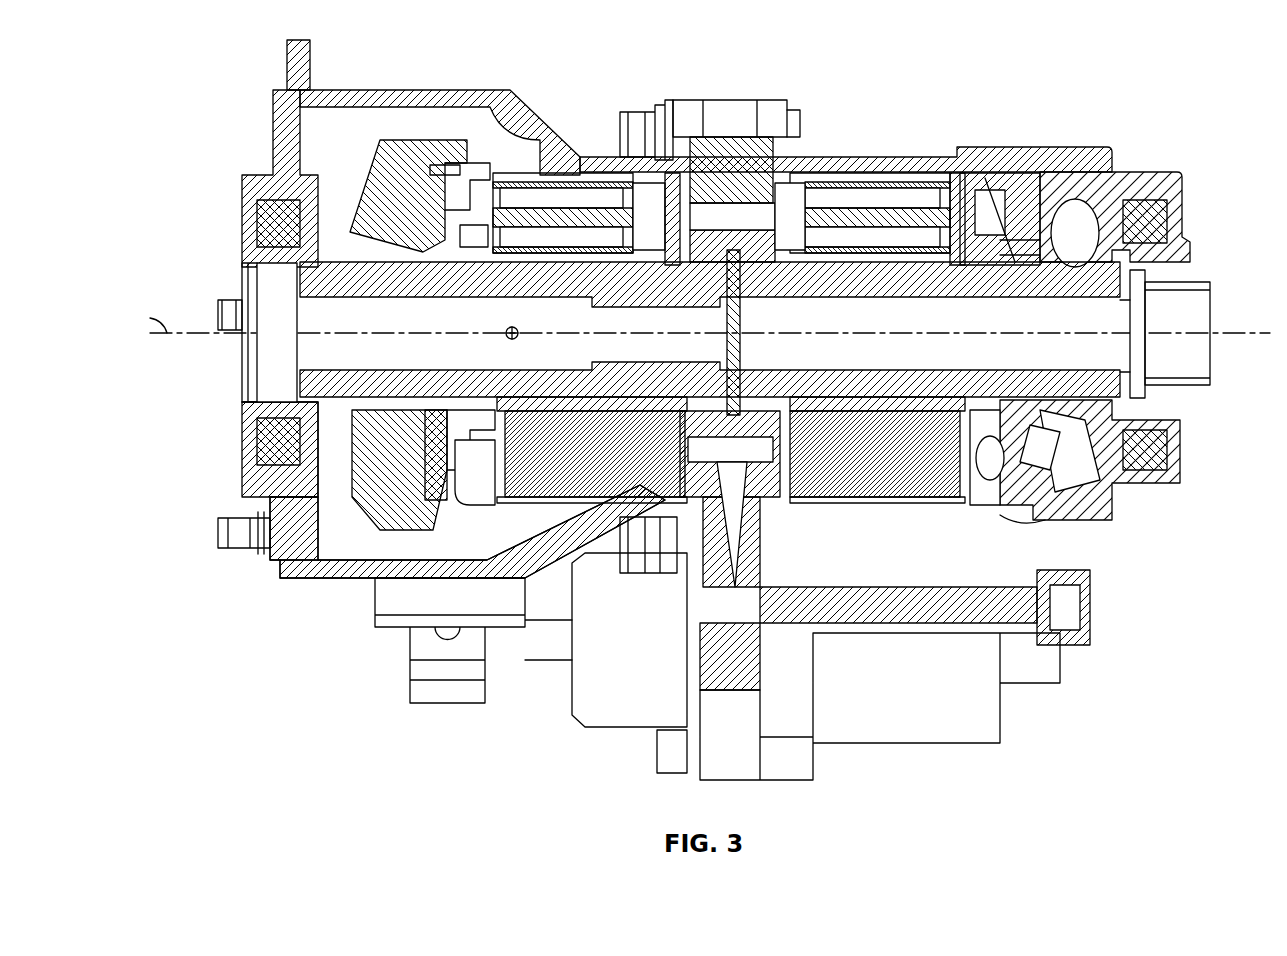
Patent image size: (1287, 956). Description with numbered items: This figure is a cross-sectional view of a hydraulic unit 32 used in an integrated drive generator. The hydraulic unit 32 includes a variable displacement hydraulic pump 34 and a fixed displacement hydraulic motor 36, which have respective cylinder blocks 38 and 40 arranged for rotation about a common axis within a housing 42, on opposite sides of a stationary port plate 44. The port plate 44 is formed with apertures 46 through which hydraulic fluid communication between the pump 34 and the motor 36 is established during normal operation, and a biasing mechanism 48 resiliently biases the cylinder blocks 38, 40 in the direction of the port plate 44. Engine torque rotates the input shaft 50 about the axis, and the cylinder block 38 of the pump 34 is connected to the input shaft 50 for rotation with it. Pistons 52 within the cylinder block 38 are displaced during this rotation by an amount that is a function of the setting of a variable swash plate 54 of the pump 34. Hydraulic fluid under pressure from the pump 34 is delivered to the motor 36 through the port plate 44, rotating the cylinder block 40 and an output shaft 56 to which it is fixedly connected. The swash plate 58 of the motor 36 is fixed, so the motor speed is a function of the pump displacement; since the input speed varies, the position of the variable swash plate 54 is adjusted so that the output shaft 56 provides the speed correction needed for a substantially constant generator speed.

The hydraulic unit 32 is at (1140, 88).
The variable displacement hydraulic pump 34 is at (482, 497).
The fixed displacement hydraulic motor 36 is at (936, 512).
The cylinder block 38 is at (662, 155).
The cylinder block 40 is at (972, 191).
The housing 42 is at (510, 103).
The stationary port plate 44 is at (738, 138).
The apertures 46 is at (745, 215).
The biasing mechanism 48 is at (857, 397).
The input shaft 50 is at (310, 340).
The pistons 52 is at (633, 187).
The variable swash plate 54 is at (385, 165).
The output shaft 56 is at (1195, 308).
The swash plate 58 is at (1083, 472).